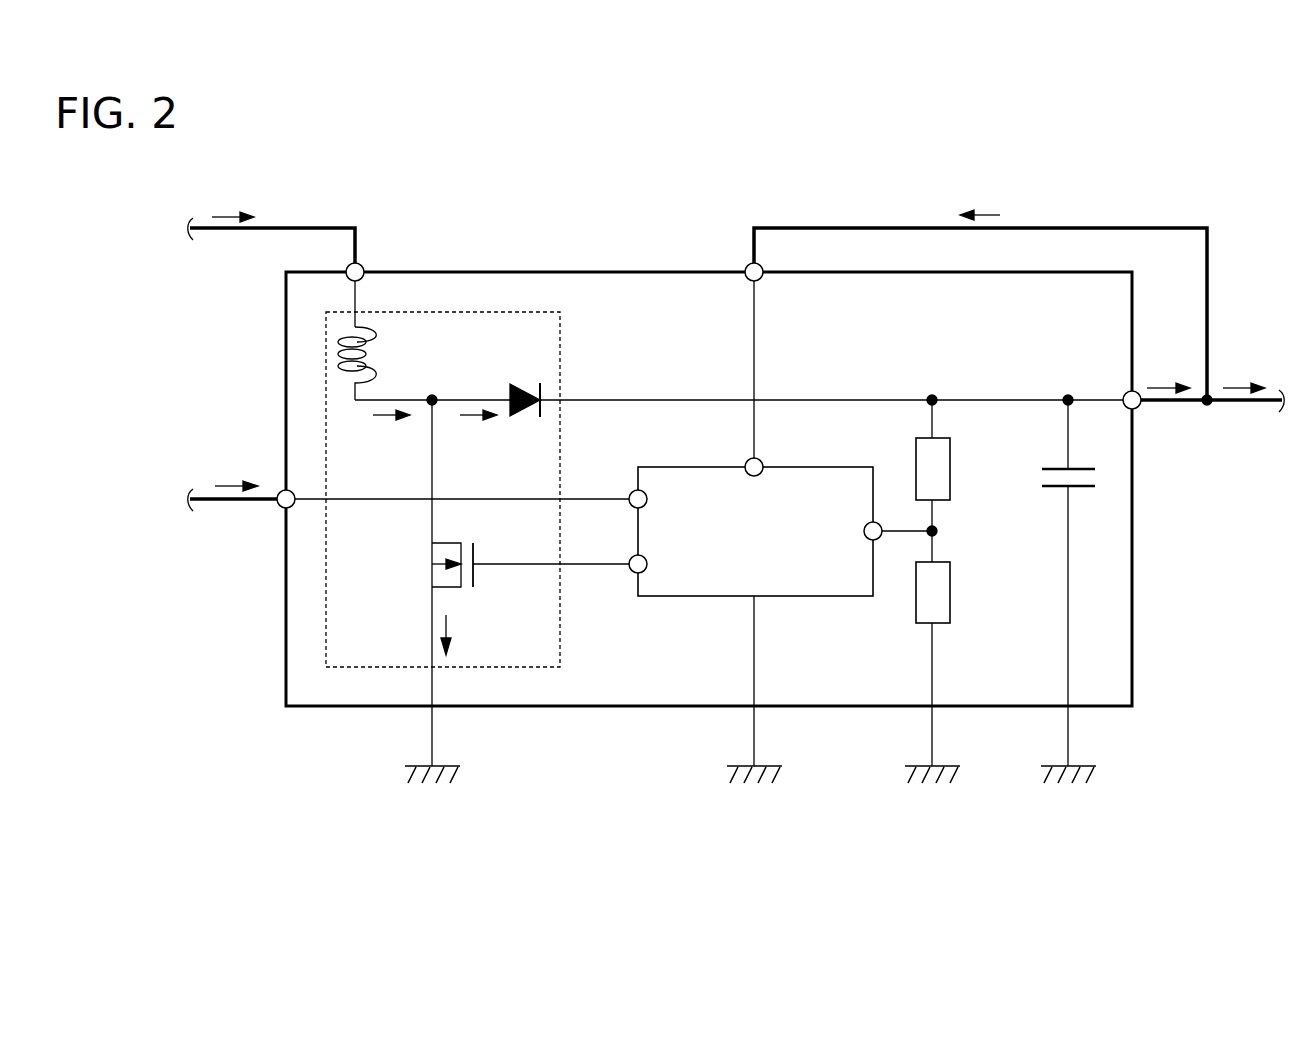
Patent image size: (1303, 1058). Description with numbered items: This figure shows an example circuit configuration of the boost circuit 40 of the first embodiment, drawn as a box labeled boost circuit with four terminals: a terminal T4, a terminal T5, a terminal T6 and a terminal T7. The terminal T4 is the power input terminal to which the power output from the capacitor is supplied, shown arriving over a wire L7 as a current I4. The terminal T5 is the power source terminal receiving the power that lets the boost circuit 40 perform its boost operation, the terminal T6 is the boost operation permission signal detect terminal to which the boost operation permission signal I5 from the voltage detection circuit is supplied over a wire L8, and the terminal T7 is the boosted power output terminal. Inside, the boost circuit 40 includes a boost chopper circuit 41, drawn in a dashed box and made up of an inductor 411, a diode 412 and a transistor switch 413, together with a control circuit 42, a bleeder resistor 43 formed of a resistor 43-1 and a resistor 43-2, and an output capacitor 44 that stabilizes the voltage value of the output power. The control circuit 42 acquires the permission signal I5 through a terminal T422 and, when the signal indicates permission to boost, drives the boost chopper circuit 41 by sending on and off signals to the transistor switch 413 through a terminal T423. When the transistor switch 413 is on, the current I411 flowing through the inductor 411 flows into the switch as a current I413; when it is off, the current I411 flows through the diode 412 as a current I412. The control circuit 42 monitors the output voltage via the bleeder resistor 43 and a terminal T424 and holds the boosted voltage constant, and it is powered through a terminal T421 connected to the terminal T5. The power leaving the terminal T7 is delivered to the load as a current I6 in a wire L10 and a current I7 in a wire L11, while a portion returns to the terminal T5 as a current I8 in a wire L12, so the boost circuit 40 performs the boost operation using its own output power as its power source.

The boost circuit 40 is at (578, 271).
The boost chopper circuit 41 is at (561, 347).
The inductor 411 is at (378, 356).
The diode 412 is at (520, 382).
The transistor switch 413 is at (477, 549).
The control circuit 42 is at (820, 466).
The bleeder resistor 43 is at (989, 585).
The resistor 43-1 is at (951, 468).
The resistor 43-2 is at (951, 592).
The output capacitor 44 is at (1081, 489).
The terminal T4 is at (364, 266).
The terminal T5 is at (746, 265).
The terminal T6 is at (283, 510).
The terminal T7 is at (1124, 393).
The terminal T421 is at (746, 461).
The terminal T422 is at (630, 492).
The terminal T423 is at (631, 572).
The terminal T424 is at (878, 541).
The line L7 is at (313, 227).
The line L8 is at (220, 506).
The wire L10 is at (1170, 404).
The wire L11 is at (1245, 404).
The wire L12 is at (1108, 227).
The current I4 is at (226, 215).
The boost operation permission signal I5 is at (226, 484).
The current I6 is at (1165, 386).
The current I7 is at (1240, 386).
The current I8 is at (988, 214).
The current I411 is at (385, 419).
The current I412 is at (478, 419).
The current I413 is at (452, 633).